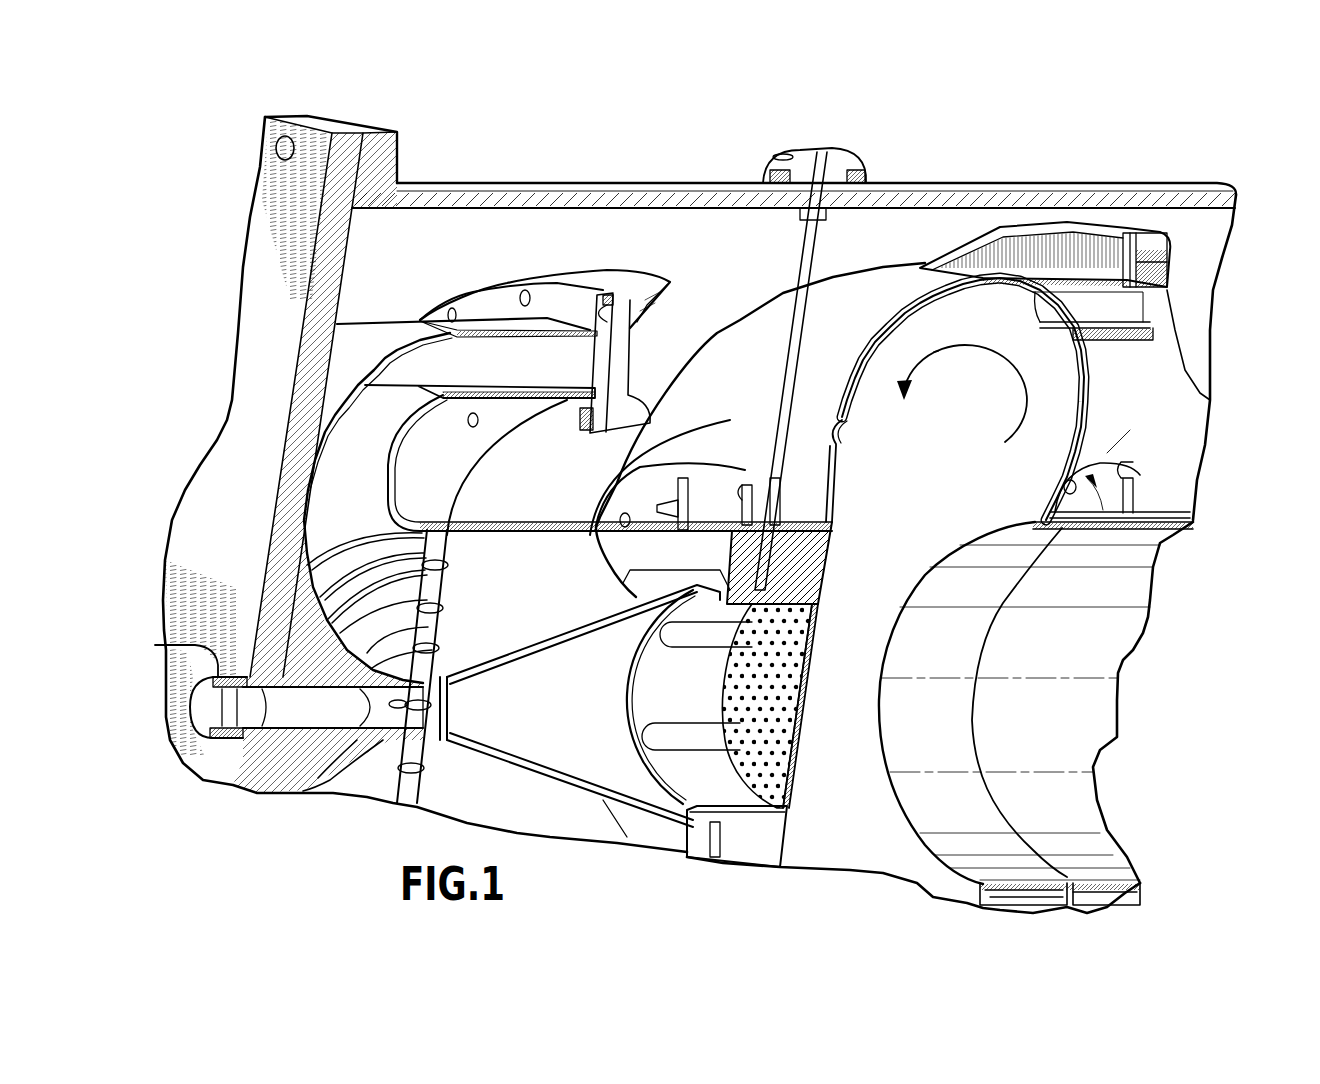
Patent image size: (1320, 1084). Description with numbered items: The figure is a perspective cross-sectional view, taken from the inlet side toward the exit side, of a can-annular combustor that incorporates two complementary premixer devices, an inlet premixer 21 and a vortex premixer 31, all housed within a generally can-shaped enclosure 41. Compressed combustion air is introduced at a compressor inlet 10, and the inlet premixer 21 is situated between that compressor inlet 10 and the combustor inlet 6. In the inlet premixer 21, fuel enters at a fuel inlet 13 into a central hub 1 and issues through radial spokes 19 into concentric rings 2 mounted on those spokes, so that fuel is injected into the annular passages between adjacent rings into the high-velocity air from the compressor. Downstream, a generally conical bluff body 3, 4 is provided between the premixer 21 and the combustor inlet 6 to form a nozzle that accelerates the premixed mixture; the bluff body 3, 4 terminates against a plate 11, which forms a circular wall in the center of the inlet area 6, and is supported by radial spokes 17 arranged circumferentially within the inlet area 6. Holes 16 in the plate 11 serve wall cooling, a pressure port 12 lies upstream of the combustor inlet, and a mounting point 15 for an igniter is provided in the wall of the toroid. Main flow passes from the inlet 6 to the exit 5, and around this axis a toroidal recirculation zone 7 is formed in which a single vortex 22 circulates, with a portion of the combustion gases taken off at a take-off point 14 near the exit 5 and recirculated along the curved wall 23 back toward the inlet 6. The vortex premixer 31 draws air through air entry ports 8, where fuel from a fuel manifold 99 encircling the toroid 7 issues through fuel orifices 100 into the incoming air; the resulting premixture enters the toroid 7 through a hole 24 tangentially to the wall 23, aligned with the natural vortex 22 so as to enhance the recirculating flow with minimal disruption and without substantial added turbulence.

The central hub 1 is at (314, 720).
The concentric rings 2 is at (445, 608).
The conical bluff body 3 is at (583, 712).
The conical bluff body 4 is at (693, 695).
The exit 5 is at (1054, 722).
The inlet 6 is at (800, 562).
The recirculation zone 7 is at (953, 417).
The air entry ports 8 is at (1122, 310).
The compressor inlet 10 is at (539, 368).
The plate 11 is at (783, 722).
The pressure port 12 is at (678, 481).
The fuel inlet 13 is at (175, 646).
The take-off point 14 is at (1010, 479).
The mounting point 15 is at (850, 435).
The holes 16 is at (800, 647).
The radial spokes 17 is at (637, 597).
The radial spokes 19 is at (443, 550).
The inlet premixer 21 is at (323, 552).
The vortex 22 is at (935, 352).
The curved wall 23 is at (1007, 338).
The hole 24 is at (1030, 310).
The vortex premixer 31 is at (1205, 365).
The can-shaped enclosure 41 is at (601, 183).
The fuel manifold 99 is at (1147, 267).
The fuel orifices 100 is at (1175, 255).